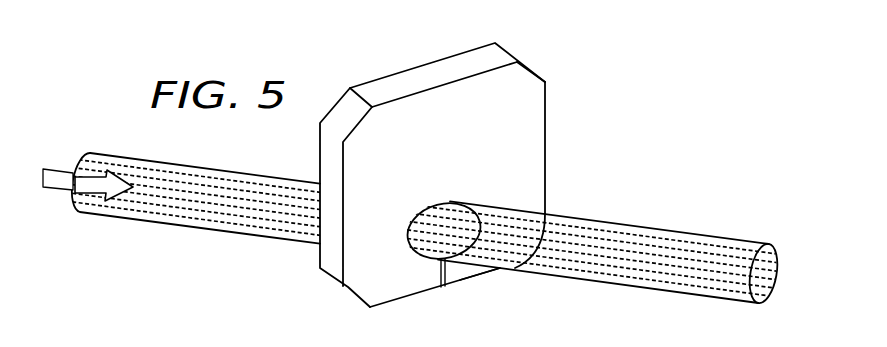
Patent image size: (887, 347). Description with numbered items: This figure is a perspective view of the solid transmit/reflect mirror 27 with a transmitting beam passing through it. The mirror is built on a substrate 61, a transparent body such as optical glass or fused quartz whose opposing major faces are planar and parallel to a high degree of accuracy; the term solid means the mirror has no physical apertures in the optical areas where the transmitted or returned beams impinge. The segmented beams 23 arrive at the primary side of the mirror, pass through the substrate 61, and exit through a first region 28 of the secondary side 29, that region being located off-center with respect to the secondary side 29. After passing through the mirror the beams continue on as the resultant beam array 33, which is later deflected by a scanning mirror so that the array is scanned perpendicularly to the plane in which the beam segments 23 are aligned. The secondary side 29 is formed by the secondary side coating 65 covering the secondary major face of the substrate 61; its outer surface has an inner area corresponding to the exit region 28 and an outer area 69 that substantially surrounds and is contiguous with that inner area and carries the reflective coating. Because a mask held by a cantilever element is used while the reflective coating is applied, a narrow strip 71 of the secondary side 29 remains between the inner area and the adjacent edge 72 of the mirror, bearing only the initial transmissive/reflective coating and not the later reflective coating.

The segmented beams 23 is at (165, 226).
The solid transmit/reflect mirror 27 is at (454, 155).
The first region of the secondary side 28 is at (438, 212).
The secondary side 29 is at (392, 162).
The resultant beam array 33 is at (668, 228).
The substrate 61 is at (428, 72).
The secondary side coating 65 is at (512, 93).
The outer area 69 is at (533, 147).
The narrow strip 71 is at (447, 278).
The adjacent edge 72 is at (488, 274).